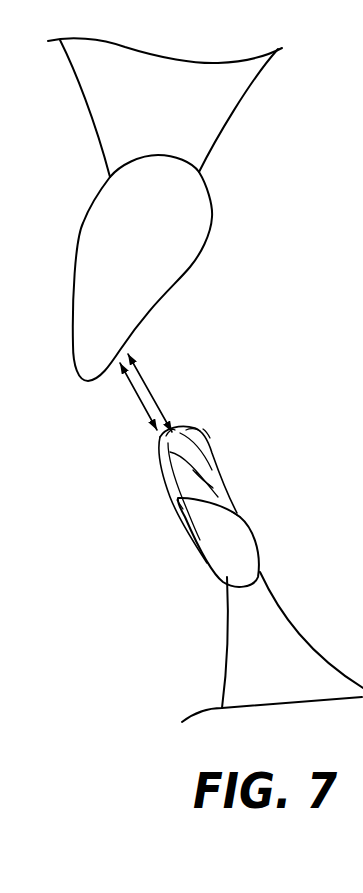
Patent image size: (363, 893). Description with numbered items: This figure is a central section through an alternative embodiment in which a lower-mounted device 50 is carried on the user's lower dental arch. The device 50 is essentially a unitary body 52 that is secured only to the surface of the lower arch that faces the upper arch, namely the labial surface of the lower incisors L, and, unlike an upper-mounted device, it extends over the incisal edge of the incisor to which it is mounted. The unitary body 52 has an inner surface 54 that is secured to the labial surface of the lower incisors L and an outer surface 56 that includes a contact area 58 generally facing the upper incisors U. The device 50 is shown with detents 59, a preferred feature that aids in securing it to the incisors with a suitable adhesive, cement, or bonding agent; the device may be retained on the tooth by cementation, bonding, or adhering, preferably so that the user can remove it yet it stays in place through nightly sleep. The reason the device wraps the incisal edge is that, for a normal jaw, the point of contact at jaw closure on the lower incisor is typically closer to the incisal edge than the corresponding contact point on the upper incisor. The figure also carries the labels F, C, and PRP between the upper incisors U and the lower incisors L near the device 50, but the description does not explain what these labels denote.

The upper incisors U is at (128, 238).
The lower incisors L is at (217, 550).
The force / compression direction arrows F is at (138, 365).
The cavity between vertebral bodies C is at (140, 405).
The lower-mounted device 50 is at (203, 478).
The unitary body 52 is at (190, 432).
The inner surface 54 is at (200, 465).
The outer surface 56 is at (177, 502).
The contact area 58 is at (173, 431).
The detents 59 is at (206, 429).
The platelet rich plasma PRP is at (200, 476).